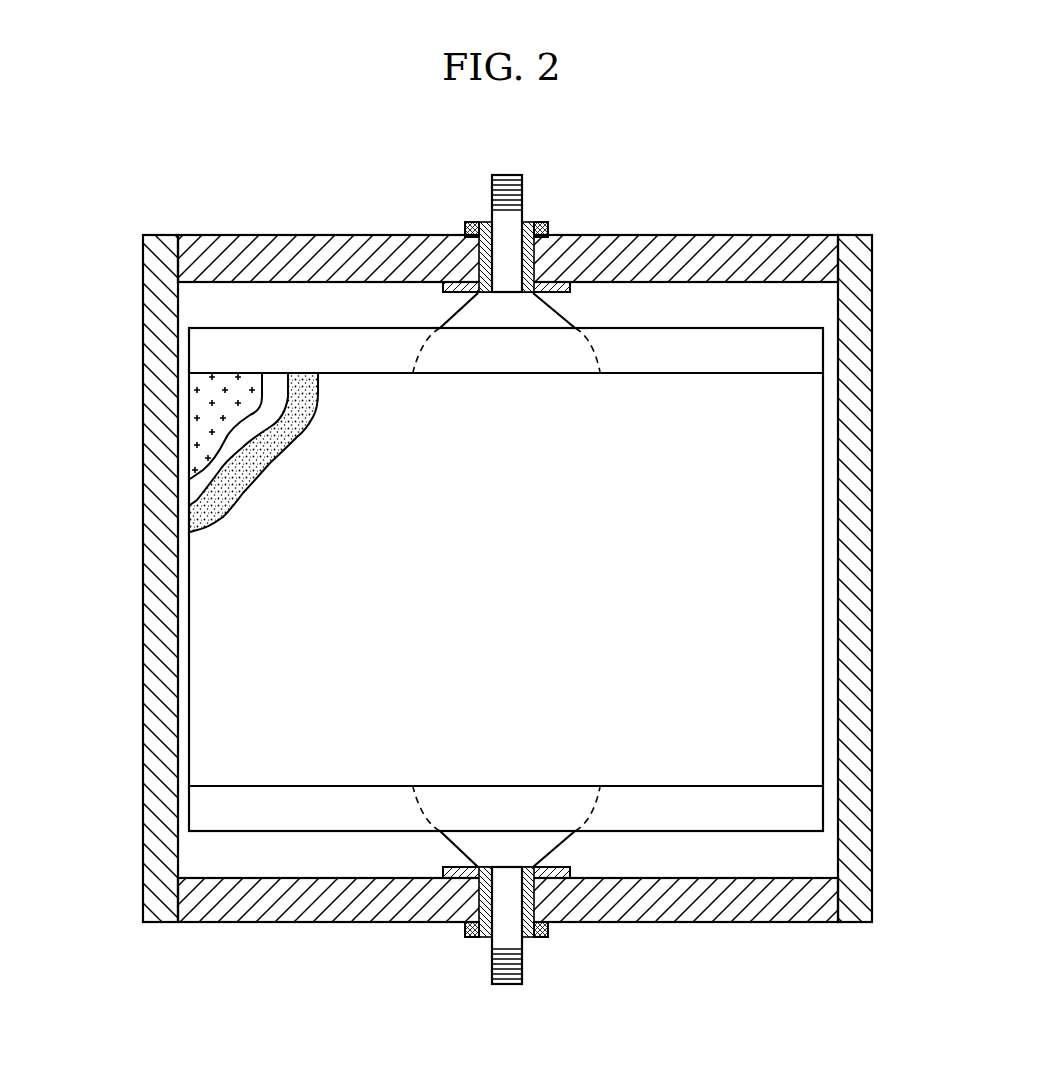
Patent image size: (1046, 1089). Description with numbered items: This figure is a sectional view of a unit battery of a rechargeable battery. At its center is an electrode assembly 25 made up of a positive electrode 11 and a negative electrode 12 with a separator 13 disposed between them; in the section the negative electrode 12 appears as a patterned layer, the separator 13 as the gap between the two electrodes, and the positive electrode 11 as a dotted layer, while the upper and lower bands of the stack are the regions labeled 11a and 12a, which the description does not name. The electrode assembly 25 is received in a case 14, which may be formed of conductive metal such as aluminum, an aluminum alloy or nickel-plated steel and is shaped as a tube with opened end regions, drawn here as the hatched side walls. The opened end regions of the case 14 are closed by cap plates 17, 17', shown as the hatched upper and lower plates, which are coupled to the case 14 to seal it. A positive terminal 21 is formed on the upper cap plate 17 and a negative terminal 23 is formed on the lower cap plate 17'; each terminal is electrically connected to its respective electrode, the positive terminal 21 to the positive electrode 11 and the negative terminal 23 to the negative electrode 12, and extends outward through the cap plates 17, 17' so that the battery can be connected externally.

The positive electrode 11 is at (200, 522).
The uncoated region of negative electrode 11a is at (210, 355).
The negative electrode 12 is at (200, 410).
The uncoated region of positive electrode 12a is at (197, 812).
The separator 13 is at (200, 487).
The case 14 is at (860, 612).
The cap plate 17 is at (508, 222).
The cap plate 17' is at (508, 937).
The positive terminal 21 is at (490, 184).
The negative terminal 23 is at (490, 972).
The electrode assembly 25 is at (205, 738).